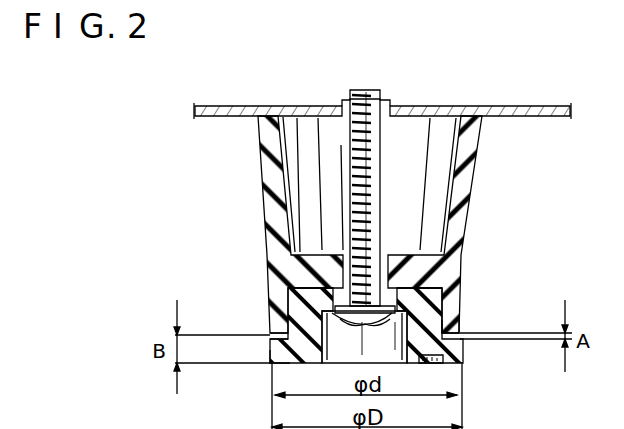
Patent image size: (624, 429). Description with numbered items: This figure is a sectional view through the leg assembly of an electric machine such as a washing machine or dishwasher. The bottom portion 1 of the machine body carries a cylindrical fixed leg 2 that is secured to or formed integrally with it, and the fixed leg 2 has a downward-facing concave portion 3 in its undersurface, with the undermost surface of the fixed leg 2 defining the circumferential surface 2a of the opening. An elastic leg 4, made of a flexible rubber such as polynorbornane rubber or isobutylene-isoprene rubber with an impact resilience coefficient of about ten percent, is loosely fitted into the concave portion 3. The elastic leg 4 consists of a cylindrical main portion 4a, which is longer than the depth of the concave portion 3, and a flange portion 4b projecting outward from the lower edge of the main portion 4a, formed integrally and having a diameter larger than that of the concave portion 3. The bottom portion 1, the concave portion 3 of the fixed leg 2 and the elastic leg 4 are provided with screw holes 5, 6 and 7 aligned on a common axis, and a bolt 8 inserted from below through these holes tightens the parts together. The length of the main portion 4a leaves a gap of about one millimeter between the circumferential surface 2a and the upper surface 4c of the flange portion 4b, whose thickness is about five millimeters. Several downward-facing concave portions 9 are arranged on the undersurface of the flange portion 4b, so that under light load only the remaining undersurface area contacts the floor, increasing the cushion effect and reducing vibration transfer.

The bottom portion 1 is at (447, 110).
The fixed leg 2 is at (458, 260).
The circumferential surface of the opening 2a is at (270, 335).
The concave portion 3 is at (452, 316).
The elastic leg 4 is at (332, 356).
The main portion 4a is at (268, 303).
The flange portion 4b is at (274, 359).
The upper surface of the flange portion 4c is at (268, 337).
The screw hole 5 is at (390, 305).
The screw hole 6 is at (381, 265).
The screw hole 7 is at (392, 100).
The bolt 8 is at (380, 176).
The concave portions 9 is at (437, 363).